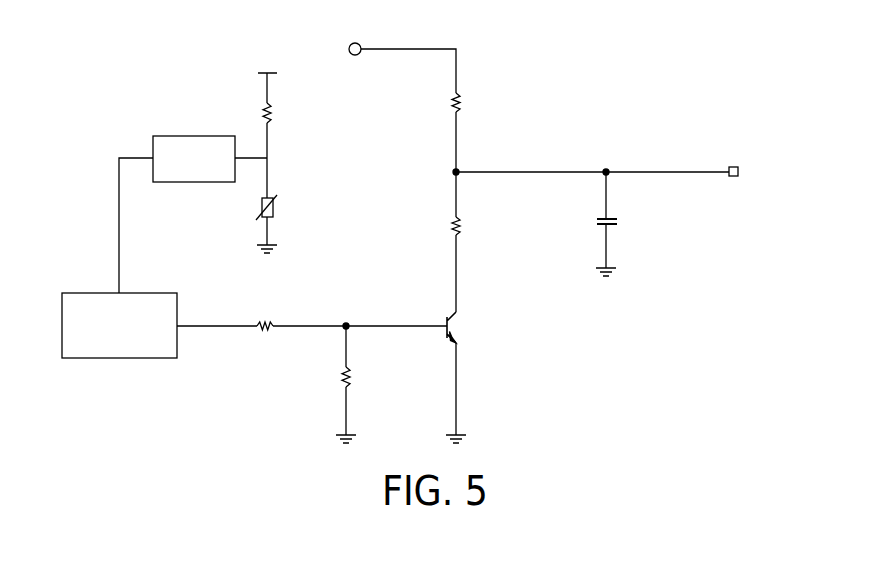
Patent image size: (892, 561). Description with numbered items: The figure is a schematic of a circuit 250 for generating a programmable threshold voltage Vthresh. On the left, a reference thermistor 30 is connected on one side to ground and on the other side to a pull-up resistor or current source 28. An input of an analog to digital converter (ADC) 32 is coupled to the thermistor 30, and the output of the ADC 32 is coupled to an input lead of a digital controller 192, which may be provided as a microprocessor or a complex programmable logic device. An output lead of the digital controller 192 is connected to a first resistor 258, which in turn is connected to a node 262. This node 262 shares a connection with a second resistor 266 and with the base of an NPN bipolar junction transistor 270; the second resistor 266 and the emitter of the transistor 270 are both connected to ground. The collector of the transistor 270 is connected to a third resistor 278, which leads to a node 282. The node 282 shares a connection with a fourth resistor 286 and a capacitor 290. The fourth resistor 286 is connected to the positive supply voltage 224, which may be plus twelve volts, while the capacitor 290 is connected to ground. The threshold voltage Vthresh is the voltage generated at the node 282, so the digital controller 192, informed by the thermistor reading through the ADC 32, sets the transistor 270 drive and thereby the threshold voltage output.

The circuit 250 is at (720, 68).
The analog to digital converter (ADC) 32 is at (193, 136).
The pull-up resistor or current source 28 is at (277, 110).
The reference thermistor 30 is at (273, 212).
The digital controller 192 is at (118, 358).
The first resistor 258 is at (265, 336).
The node 262 is at (346, 325).
The second resistor 266 is at (354, 375).
The NPN bipolar junction transistor 270 is at (458, 325).
The fourth resistor 286 is at (469, 103).
The third resistor 278 is at (469, 227).
The node 282 is at (606, 172).
The capacitor 290 is at (623, 221).
The positive supply voltage 224 is at (349, 47).